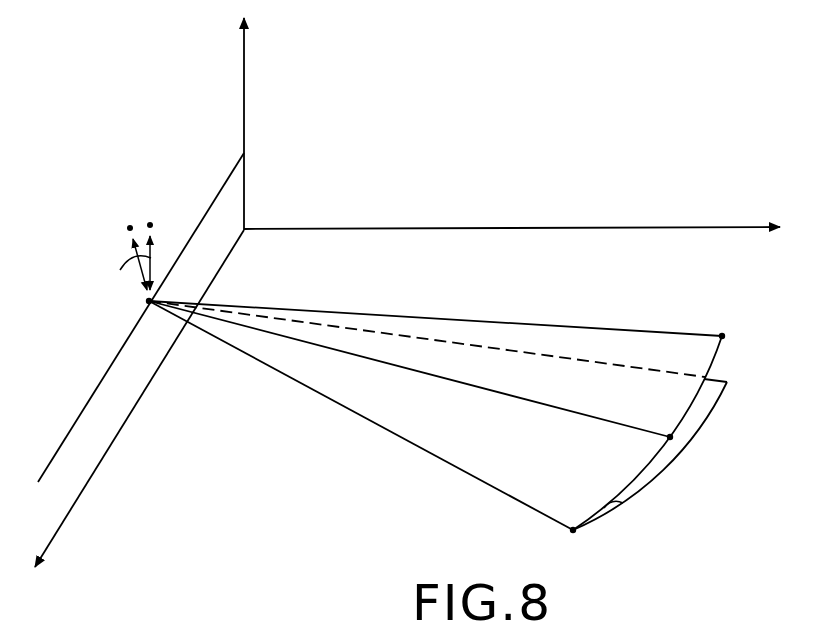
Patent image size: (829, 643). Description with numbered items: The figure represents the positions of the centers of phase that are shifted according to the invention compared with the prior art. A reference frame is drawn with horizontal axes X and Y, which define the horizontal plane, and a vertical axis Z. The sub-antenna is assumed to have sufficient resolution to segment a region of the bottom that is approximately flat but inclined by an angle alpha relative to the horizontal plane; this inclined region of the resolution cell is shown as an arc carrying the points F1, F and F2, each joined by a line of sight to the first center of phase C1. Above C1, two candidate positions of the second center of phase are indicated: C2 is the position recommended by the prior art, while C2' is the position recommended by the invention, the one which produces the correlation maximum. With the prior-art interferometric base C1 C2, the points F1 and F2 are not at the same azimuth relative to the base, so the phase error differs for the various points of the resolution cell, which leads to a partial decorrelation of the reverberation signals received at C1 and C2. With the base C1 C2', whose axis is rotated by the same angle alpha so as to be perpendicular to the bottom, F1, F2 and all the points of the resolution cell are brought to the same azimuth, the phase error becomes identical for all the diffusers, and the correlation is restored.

The first center of phase C1 is at (134, 304).
The second center of phase recommended by the prior art C2 is at (151, 246).
The second position recommended by the invention C2' is at (123, 251).
The point of the resolution cell F is at (678, 441).
The point of the resolution cell F1 is at (578, 546).
The point of the resolution cell F2 is at (724, 323).
The x axis X is at (133, 413).
The y axis Y is at (522, 228).
The z axis Z is at (255, 122).